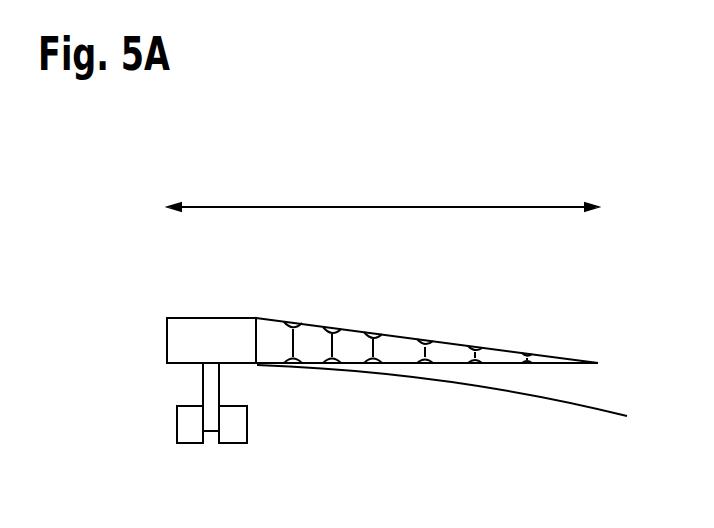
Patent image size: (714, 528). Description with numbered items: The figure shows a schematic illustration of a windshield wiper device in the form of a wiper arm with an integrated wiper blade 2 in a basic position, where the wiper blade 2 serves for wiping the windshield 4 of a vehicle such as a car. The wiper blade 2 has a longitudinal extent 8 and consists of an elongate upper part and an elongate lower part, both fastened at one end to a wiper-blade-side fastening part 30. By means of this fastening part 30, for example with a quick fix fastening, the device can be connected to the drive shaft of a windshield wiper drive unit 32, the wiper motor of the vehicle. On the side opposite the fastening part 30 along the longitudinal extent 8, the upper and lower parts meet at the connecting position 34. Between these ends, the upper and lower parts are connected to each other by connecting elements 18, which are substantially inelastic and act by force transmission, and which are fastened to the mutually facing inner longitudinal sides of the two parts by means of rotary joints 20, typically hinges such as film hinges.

The wiper blade 2 is at (588, 259).
The windshield 4 is at (575, 405).
The longitudinal extent 8 is at (367, 206).
The connecting elements 18 is at (295, 343).
The rotary joints 20 is at (293, 322).
The wiper-blade-side fastening part 30 is at (178, 345).
The windshield wiper drive unit 32 is at (184, 426).
The connecting position 34 is at (600, 363).